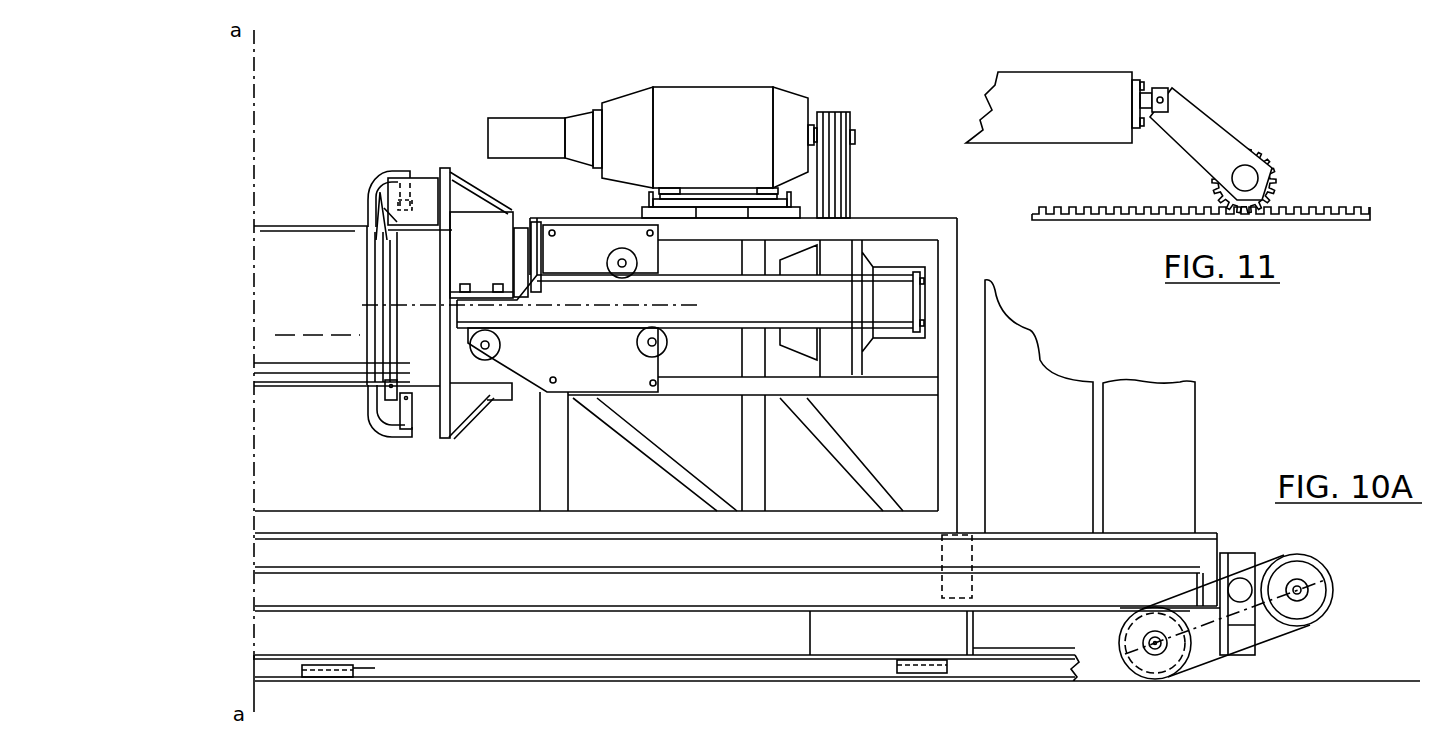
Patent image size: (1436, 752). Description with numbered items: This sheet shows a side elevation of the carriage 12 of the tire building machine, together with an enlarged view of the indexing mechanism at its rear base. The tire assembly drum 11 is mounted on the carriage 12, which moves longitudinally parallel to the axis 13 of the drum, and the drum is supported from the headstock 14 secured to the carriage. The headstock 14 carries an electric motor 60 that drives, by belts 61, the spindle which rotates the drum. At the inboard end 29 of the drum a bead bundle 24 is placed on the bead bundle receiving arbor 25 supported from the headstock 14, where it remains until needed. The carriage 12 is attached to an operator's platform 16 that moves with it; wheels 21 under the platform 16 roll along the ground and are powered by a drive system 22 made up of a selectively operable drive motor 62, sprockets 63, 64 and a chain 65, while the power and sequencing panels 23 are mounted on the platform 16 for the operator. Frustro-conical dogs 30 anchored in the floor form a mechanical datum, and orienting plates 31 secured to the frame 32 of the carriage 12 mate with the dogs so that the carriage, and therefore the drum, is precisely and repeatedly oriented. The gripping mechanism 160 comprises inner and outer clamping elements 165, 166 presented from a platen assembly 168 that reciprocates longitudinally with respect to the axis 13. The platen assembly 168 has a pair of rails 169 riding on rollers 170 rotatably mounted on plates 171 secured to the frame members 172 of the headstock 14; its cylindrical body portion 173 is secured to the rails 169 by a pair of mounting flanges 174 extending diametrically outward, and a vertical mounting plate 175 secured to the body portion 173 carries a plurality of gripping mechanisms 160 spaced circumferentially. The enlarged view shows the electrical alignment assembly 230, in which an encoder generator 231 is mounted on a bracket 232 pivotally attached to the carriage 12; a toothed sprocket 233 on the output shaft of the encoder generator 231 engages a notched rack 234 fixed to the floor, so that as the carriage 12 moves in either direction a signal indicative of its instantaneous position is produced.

In FIG. 10A, the tire assembly drum 11 is at (283, 233).
In FIG. 10A, the carriage 12 is at (683, 668).
In FIG. 11, the carriage 12 is at (1077, 68).
In FIG. 10A, the axis 13 is at (562, 305).
In FIG. 10A, the headstock 14 is at (583, 72).
In FIG. 10A, the operator's platform 16 is at (601, 590).
In FIG. 10A, the wheels 21 is at (1124, 668).
In FIG. 10A, the drive system 22 is at (1331, 552).
In FIG. 10A, the power and sequencing panels 23 is at (1195, 380).
In FIG. 10A, the bead bundle 24 is at (383, 265).
In FIG. 10A, the bead bundle receiving arbor 25 is at (392, 288).
In FIG. 10A, the inboard end 29 is at (346, 204).
In FIG. 10A, the frustro-conical dogs 30 is at (348, 667).
In FIG. 10A, the orienting plates 31 is at (362, 668).
In FIG. 10A, the frame 32 is at (530, 652).
In FIG. 10A, the electric motor 60 is at (748, 97).
In FIG. 10A, the belts 61 is at (852, 186).
In FIG. 10A, the drive motor 62 is at (1333, 606).
In FIG. 10A, the sprocket 63 is at (1320, 580).
In FIG. 10A, the sprocket 64 is at (1150, 673).
In FIG. 10A, the chain 65 is at (1200, 660).
In FIG. 10A, the gripping mechanism 160 is at (385, 150).
In FIG. 10A, the inner clamping element 165 is at (405, 380).
In FIG. 10A, the outer clamping element 166 is at (378, 420).
In FIG. 10A, the platen assembly 168 is at (463, 438).
In FIG. 10A, the rails 169 is at (686, 313).
In FIG. 10A, the rollers 170 is at (610, 258).
In FIG. 10A, the plates 171 is at (580, 378).
In FIG. 10A, the frame members 172 is at (714, 392).
In FIG. 10A, the cylindrical body portion 173 is at (497, 396).
In FIG. 10A, the mounting flanges 174 is at (487, 293).
In FIG. 10A, the vertical mounting plate 175 is at (446, 440).
In FIG. 11, the electrical alignment assembly 230 is at (1216, 80).
In FIG. 11, the encoder generator 231 is at (1247, 168).
In FIG. 11, the bracket 232 is at (1210, 135).
In FIG. 11, the toothed sprocket 233 is at (1276, 192).
In FIG. 11, the notched rack 234 is at (1156, 208).